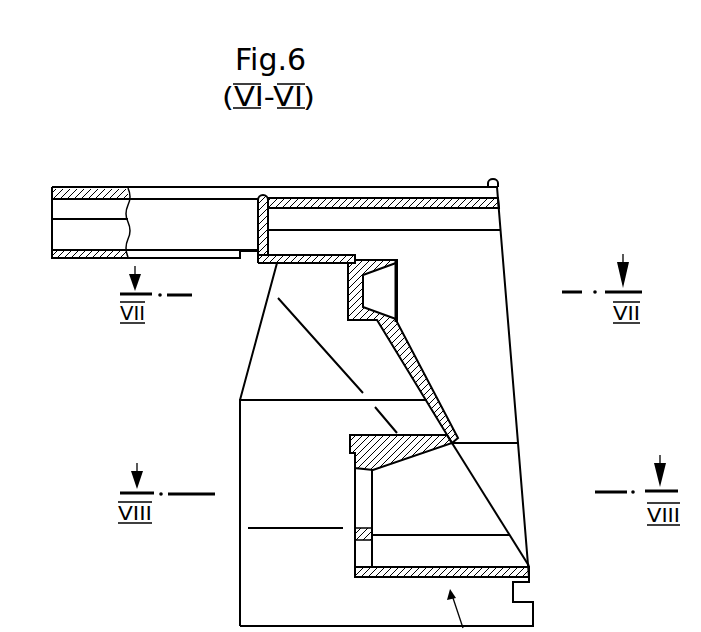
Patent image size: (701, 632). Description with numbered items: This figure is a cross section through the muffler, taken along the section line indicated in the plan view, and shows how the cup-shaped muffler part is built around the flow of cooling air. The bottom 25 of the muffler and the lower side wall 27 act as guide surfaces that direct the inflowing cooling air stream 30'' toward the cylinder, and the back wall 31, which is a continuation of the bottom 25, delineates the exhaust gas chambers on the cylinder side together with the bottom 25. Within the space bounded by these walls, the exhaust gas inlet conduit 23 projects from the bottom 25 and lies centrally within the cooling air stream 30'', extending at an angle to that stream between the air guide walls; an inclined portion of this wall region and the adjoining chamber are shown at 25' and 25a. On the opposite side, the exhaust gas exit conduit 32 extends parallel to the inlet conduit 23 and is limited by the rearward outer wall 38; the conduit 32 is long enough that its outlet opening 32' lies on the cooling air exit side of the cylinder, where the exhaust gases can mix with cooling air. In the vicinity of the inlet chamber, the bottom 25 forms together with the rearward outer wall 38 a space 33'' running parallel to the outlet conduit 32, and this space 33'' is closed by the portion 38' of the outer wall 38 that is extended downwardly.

The exhaust gas exit conduit 32 is at (160, 203).
The outlet opening 32' is at (32, 222).
The downwardly extended portion of the outer wall 38' is at (239, 225).
The back wall 31 is at (260, 262).
The space parallel to the outlet 33'' is at (384, 189).
The rearward outer wall 38 is at (383, 174).
The connecting web 25' is at (327, 280).
The bottom 25 is at (401, 351).
The chamber 25a is at (378, 365).
The cooling air stream 30'' is at (400, 406).
The inlet conduit 23 is at (410, 445).
The lower side wall 27 is at (260, 515).